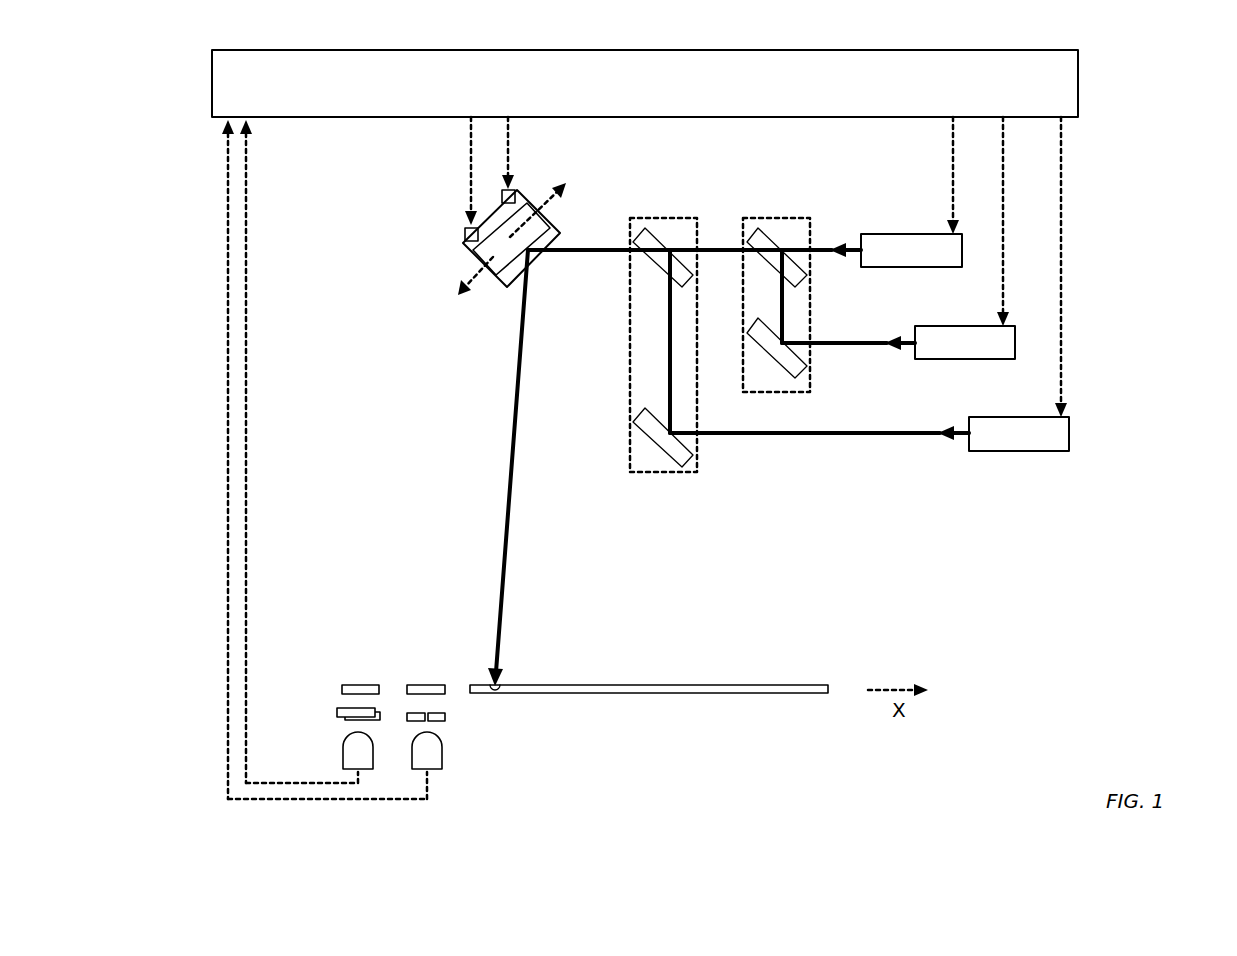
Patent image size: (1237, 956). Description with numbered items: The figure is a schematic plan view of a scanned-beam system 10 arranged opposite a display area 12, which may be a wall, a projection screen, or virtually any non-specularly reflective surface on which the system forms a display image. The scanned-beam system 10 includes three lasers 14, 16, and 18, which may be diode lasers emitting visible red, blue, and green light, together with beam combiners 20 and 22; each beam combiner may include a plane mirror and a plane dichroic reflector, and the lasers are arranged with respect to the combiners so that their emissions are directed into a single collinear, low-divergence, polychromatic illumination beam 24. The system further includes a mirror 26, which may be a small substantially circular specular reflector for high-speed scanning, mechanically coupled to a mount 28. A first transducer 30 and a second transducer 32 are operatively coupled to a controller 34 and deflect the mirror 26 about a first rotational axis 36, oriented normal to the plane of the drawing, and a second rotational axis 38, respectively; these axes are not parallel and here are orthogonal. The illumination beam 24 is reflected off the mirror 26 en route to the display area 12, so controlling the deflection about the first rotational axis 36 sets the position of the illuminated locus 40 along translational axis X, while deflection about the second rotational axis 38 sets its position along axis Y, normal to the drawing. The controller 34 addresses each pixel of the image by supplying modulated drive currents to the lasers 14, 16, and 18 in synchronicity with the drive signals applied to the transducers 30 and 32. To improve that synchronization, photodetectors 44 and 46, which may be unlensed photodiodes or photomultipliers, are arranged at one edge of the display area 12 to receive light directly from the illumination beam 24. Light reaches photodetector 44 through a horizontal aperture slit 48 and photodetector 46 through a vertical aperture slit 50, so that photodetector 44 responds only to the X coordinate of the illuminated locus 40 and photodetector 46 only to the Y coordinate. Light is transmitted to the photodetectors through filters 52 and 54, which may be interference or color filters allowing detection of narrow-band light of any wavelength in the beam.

The scanned-beam system 10 is at (913, 548).
The display area 12 is at (811, 680).
The laser 14 is at (922, 261).
The laser 16 is at (976, 353).
The laser 18 is at (1030, 444).
The beam combiner 20 is at (778, 217).
The beam combiner 22 is at (663, 217).
The illumination beam 24 is at (523, 393).
The mirror 26 is at (522, 190).
The mount 28 is at (472, 266).
The first transducer 30 is at (464, 240).
The second transducer 32 is at (502, 198).
The controller 34 is at (656, 95).
The first rotational axis 36 is at (513, 234).
The second rotational axis 38 is at (553, 207).
The illuminated locus 40 is at (497, 693).
The photodetector 44 is at (348, 770).
The photodetector 46 is at (438, 770).
The horizontal aperture slit 48 is at (328, 714).
The vertical aperture slit 50 is at (453, 715).
The filter 52 is at (345, 685).
The filter 54 is at (440, 685).